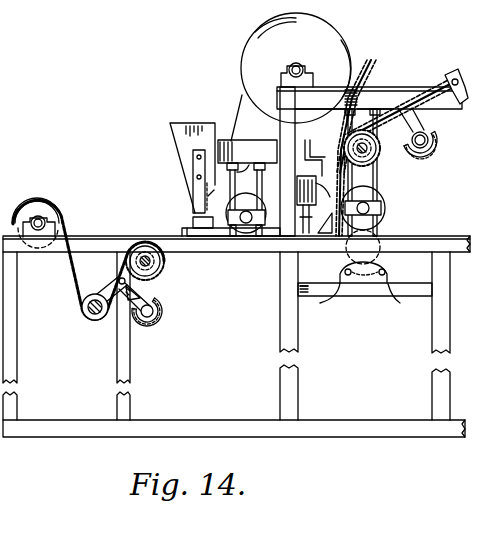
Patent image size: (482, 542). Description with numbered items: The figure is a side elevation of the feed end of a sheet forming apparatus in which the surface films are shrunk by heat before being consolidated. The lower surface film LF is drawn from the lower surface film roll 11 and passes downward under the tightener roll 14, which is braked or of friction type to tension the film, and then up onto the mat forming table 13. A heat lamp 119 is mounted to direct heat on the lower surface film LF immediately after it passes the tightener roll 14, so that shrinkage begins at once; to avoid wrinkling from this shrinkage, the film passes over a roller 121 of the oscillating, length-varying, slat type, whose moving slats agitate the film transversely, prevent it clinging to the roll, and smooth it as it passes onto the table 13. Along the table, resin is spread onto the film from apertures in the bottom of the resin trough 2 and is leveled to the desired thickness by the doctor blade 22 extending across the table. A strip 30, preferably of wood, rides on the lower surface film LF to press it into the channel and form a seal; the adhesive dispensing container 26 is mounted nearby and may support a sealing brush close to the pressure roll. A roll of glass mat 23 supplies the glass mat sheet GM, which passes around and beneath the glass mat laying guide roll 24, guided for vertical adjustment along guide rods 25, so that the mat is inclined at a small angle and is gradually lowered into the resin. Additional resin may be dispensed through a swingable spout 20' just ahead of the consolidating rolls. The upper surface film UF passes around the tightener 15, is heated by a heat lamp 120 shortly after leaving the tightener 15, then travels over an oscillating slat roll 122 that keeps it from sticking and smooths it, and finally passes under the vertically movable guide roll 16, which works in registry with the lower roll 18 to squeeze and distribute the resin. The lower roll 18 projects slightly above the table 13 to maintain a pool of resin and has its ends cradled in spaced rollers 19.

The resin trough 2 is at (188, 127).
The lower surface film roll 11 is at (46, 212).
The mat forming table 13 is at (178, 247).
The tightener roll 14 is at (86, 318).
The tightener 15 is at (452, 71).
The guide roll 16 is at (385, 208).
The lower roll 18 is at (380, 266).
The rollers 19 is at (400, 303).
The spout 20' is at (361, 148).
The doctor blade 22 is at (196, 230).
The roll of glass mat 23 is at (339, 38).
The glass mat laying guide roll 24 is at (252, 236).
The guide rods 25 is at (249, 165).
The adhesive dispensing container 26 is at (300, 180).
The strip 30 is at (222, 240).
The heat lamp 119 is at (160, 321).
The heat lamp 120 is at (436, 150).
The roller 121 is at (160, 274).
The slat roll 122 is at (376, 158).
The glass mat sheet GM is at (240, 97).
The lower surface film LF is at (70, 283).
The upper surface film UF is at (444, 84).